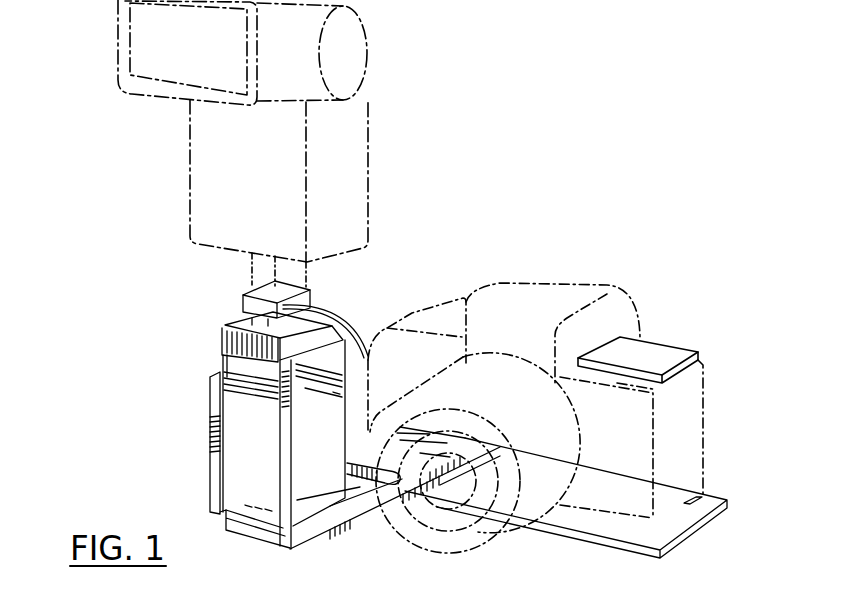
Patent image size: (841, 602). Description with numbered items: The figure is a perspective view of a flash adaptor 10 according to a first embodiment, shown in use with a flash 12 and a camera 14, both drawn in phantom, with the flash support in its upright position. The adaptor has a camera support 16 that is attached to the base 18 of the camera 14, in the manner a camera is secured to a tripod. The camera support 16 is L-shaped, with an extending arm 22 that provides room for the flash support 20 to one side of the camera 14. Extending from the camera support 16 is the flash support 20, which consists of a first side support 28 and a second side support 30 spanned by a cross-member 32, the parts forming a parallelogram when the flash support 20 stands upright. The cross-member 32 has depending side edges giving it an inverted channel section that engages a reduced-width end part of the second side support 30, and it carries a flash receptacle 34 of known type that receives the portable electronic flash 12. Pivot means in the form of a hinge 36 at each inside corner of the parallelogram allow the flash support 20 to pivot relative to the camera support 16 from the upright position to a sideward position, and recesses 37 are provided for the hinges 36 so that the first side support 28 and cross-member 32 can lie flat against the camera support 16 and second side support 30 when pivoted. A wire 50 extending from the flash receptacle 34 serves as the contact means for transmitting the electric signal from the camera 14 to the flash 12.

The flash adaptor 10 is at (190, 395).
The flash 12 is at (388, 168).
The camera 14 is at (607, 284).
The camera support 16 is at (642, 559).
The base 18 is at (703, 496).
The flash support 20 is at (208, 385).
The extending arm 22 is at (363, 517).
The first side support 28 is at (283, 531).
The second side support 30 is at (207, 470).
The cross-member 32 is at (228, 322).
The flash receptacle 34 is at (311, 290).
The hinge 36 is at (230, 530).
The recesses 37 is at (288, 475).
The wire 50 is at (362, 330).